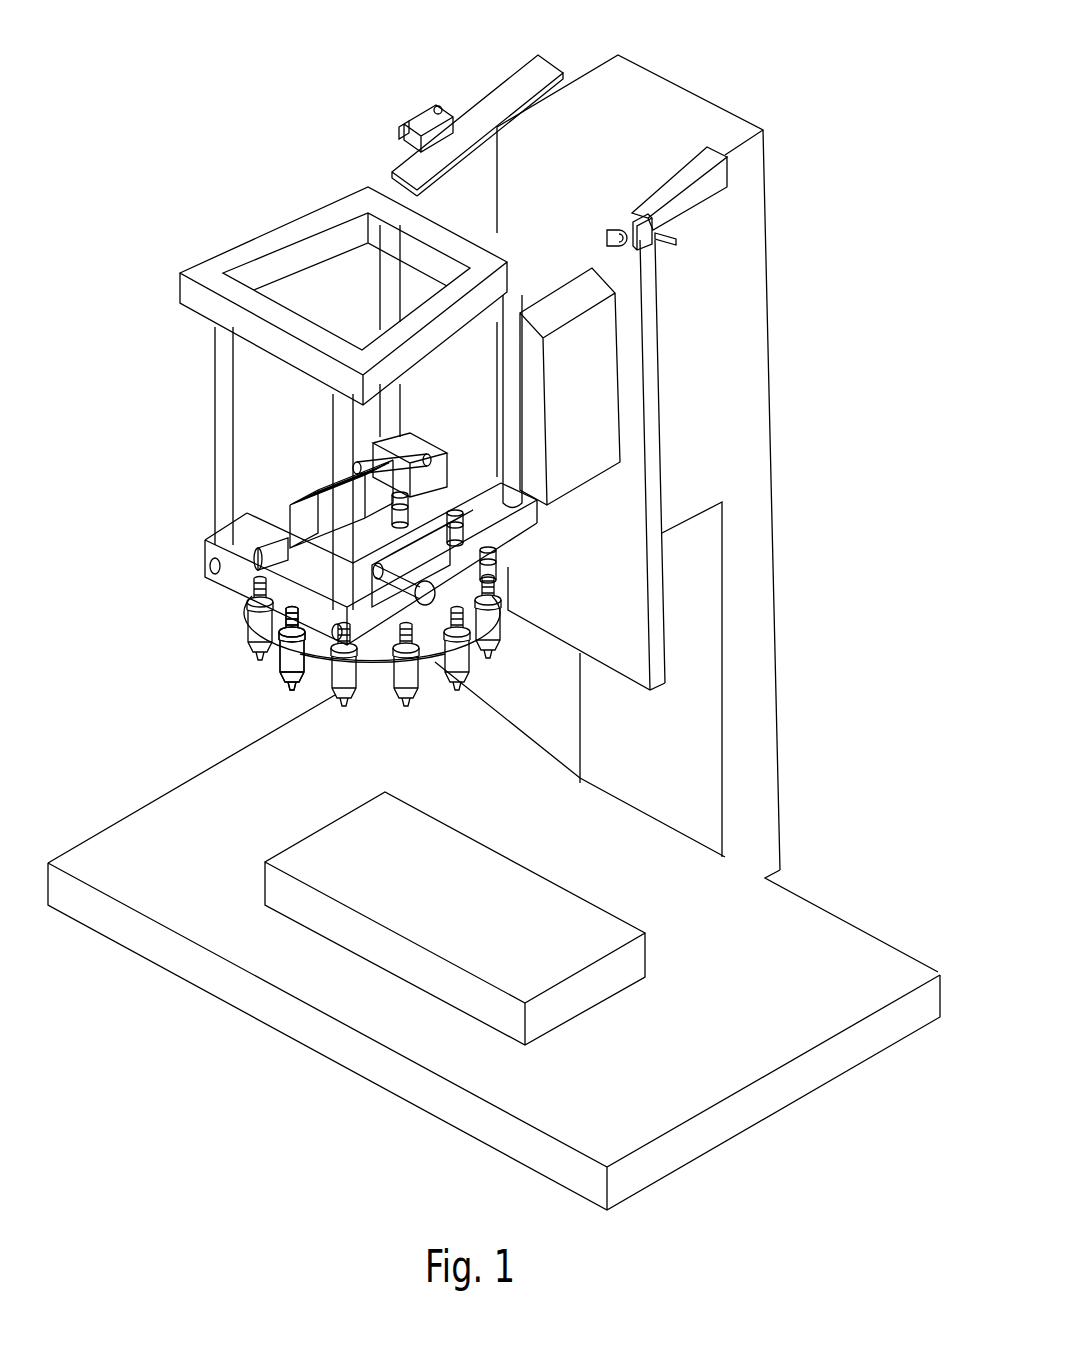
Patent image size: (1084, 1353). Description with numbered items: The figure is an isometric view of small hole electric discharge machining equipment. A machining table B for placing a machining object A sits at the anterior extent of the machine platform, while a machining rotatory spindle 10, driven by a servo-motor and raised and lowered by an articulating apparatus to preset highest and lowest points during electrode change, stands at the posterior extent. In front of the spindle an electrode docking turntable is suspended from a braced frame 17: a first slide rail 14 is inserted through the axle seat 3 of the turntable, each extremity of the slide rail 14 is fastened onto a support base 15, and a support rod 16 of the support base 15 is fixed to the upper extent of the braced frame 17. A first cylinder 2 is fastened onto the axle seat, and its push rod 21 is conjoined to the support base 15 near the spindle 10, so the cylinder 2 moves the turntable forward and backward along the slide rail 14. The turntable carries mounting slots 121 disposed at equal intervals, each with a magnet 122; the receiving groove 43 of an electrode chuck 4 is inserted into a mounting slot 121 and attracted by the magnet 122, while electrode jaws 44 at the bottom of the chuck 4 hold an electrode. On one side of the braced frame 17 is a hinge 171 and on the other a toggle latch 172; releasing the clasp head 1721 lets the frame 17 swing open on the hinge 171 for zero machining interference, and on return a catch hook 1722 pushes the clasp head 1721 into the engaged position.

The machining rotatory spindle 10 is at (580, 387).
The first slide rail 14 is at (510, 567).
The support base 15 is at (253, 580).
The support rod 16 is at (383, 305).
The braced frame 17 is at (373, 157).
The hinge 171 is at (423, 133).
The clasp head 1721 is at (640, 222).
The catch hook 1722 is at (615, 228).
The toggle latch 172 is at (655, 245).
The first cylinder 2 is at (287, 513).
The push rod 21 is at (283, 543).
The axle seat 3 is at (430, 625).
The electrode chuck 4 is at (250, 632).
The electrode jaws 44 is at (262, 660).
The mounting slot 121 is at (310, 672).
The receiving groove 43 is at (310, 672).
The magnet 122 is at (362, 667).
The machining object A is at (373, 880).
The machining table B is at (732, 1022).